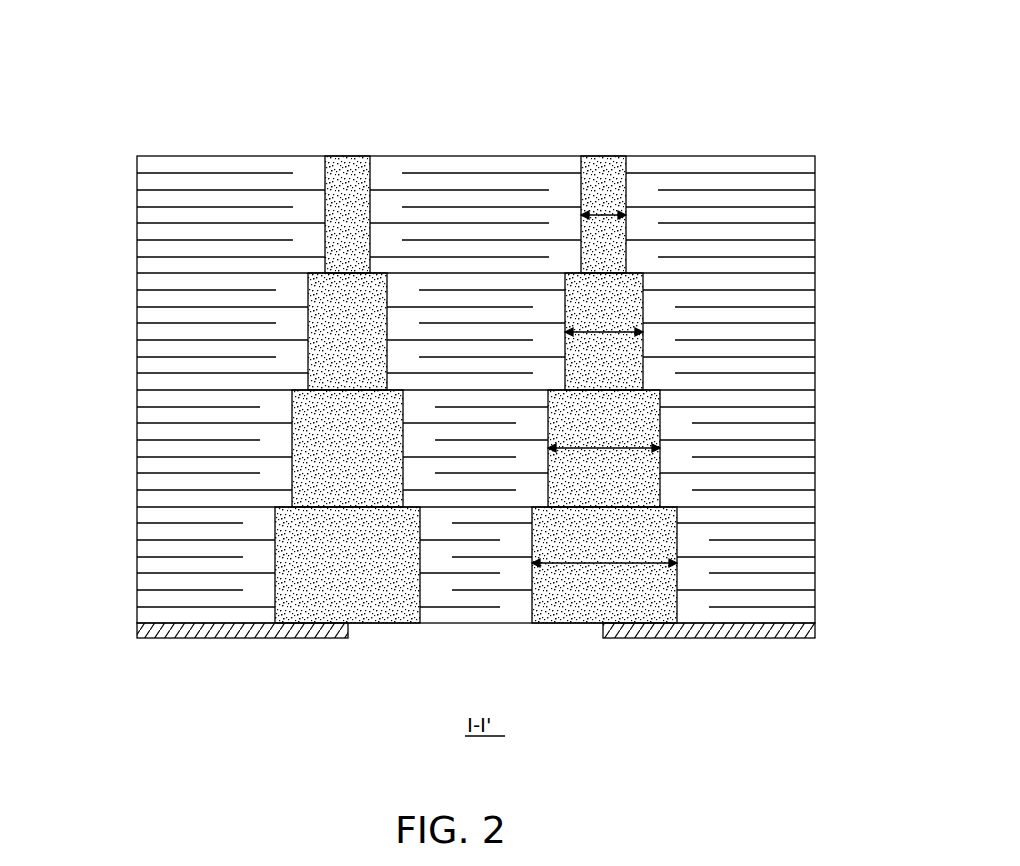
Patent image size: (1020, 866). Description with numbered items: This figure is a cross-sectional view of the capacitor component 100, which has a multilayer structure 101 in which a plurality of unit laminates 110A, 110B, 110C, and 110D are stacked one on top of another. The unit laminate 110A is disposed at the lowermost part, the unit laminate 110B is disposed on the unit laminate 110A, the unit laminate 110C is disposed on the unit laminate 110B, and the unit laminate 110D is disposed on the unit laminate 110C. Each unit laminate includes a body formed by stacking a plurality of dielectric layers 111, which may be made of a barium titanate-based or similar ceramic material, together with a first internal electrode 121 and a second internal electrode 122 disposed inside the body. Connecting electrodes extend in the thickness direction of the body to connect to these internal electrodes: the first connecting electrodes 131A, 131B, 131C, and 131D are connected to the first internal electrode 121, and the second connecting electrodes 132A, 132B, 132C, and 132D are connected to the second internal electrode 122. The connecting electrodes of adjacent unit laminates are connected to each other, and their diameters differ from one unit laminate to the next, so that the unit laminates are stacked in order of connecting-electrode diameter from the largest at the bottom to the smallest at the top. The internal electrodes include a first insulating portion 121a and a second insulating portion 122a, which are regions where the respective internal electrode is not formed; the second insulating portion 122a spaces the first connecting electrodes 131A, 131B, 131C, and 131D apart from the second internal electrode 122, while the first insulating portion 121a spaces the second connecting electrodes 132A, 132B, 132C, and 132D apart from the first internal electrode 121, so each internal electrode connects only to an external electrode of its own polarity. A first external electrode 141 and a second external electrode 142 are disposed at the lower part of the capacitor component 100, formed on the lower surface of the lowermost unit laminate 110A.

The capacitor component 100 is at (574, 42).
The multilayer structure 101 is at (481, 146).
The dielectric layer 111 is at (152, 233).
The first internal electrode 121 is at (152, 202).
The second internal electrode 122 is at (152, 170).
The first insulating portion 121a is at (641, 190).
The second insulating portion 122a is at (309, 172).
The first connecting electrode 131A is at (380, 624).
The first connecting electrode 131B is at (320, 422).
The first connecting electrode 131C is at (320, 308).
The first connecting electrode 131D is at (349, 168).
The second connecting electrode 132A is at (571, 625).
The second connecting electrode 132B is at (590, 475).
The second connecting electrode 132C is at (585, 362).
The second connecting electrode 132D is at (603, 167).
The unit laminate 110A is at (822, 507).
The unit laminate 110B is at (822, 390).
The unit laminate 110C is at (822, 273).
The unit laminate 110D is at (822, 156).
The first external electrode 141 is at (205, 638).
The second external electrode 142 is at (752, 638).